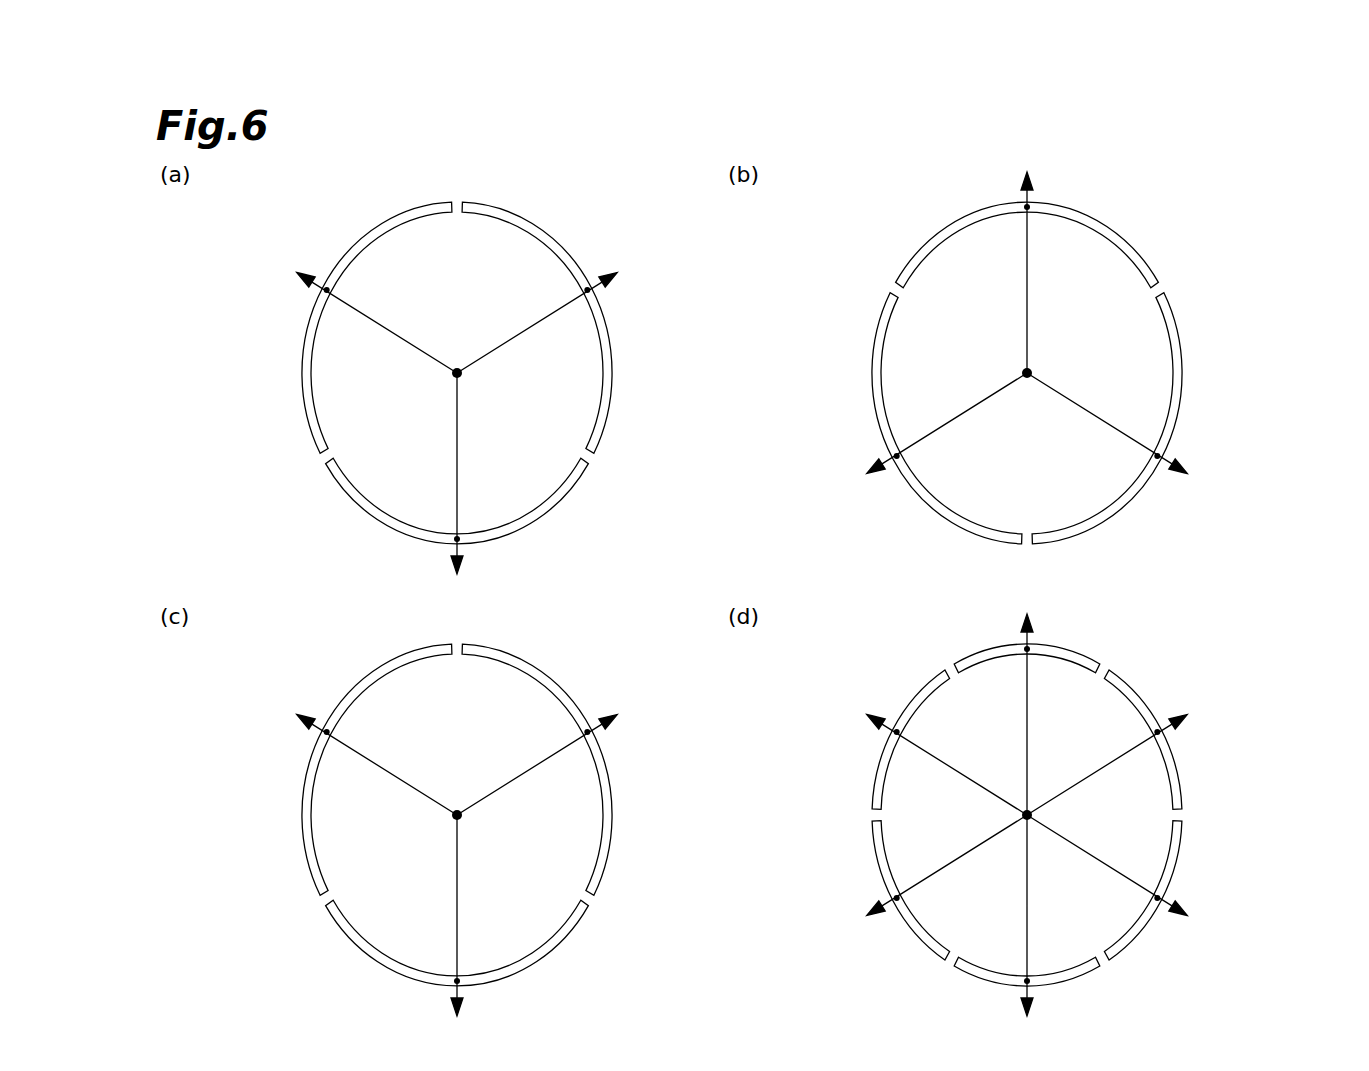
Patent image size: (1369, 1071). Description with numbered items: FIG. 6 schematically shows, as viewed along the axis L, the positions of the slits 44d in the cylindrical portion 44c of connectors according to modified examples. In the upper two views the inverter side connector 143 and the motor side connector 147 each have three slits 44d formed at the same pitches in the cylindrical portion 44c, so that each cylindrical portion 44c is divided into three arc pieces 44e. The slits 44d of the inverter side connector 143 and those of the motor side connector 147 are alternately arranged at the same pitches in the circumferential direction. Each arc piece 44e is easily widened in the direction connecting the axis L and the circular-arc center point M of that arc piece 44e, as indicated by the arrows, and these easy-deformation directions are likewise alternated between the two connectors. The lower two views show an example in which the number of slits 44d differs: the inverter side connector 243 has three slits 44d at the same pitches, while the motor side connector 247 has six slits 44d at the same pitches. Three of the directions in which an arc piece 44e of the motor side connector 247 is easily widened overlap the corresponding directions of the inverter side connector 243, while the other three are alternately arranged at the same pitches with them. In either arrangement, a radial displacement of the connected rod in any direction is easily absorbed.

The inverter side connector 143 is at (510, 212).
The motor side connector 147 is at (1080, 212).
The inverter side connector 243 is at (510, 654).
The motor side connector 247 is at (1080, 652).
The arc piece 44e is at (747, 586).
The cylindrical portion 44c is at (747, 586).
The slit 44d is at (760, 621).
The circular-arc center point M is at (756, 594).
The axis L is at (764, 593).